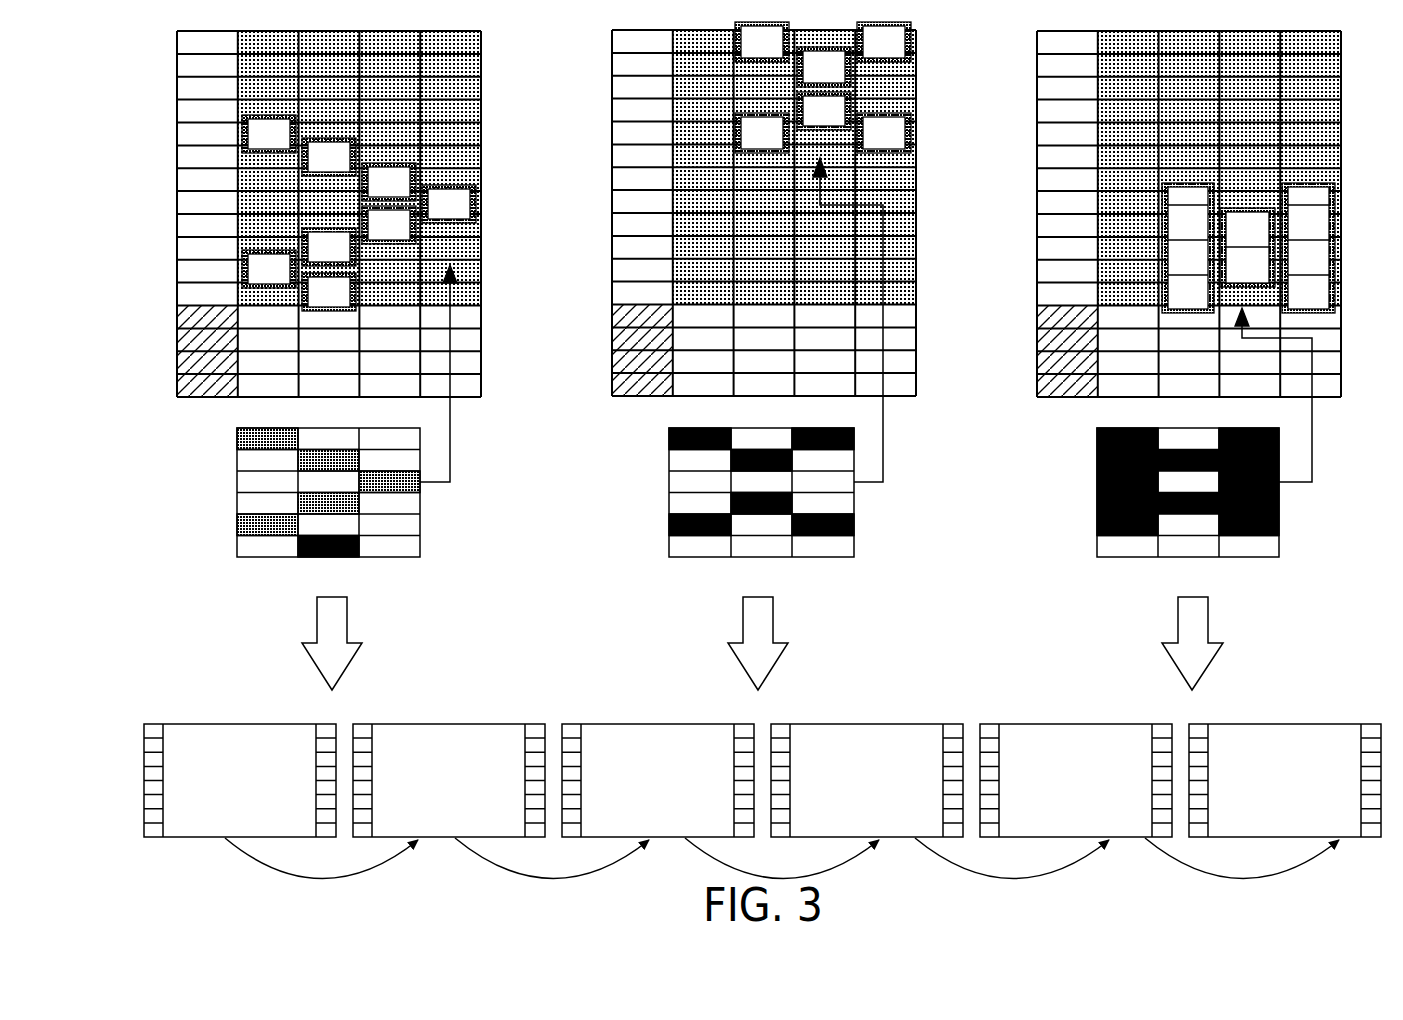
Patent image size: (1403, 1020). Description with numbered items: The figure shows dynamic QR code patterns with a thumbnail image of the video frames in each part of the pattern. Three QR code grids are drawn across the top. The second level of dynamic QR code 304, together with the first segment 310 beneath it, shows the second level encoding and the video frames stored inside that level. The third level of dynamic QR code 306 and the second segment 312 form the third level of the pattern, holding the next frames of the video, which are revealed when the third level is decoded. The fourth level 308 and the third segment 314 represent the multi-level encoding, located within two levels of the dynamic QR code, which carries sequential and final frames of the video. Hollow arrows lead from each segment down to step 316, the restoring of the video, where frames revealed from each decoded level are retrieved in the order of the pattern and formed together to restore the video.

The second level of dynamic QR code 304 is at (177, 218).
The third level of dynamic QR code 306 is at (612, 218).
The fourth level of dynamic QR code 308 is at (1037, 215).
The first segment 310 is at (327, 558).
The second segment 312 is at (785, 558).
The third segment 314 is at (1198, 558).
The restoring of the video 316 is at (145, 705).